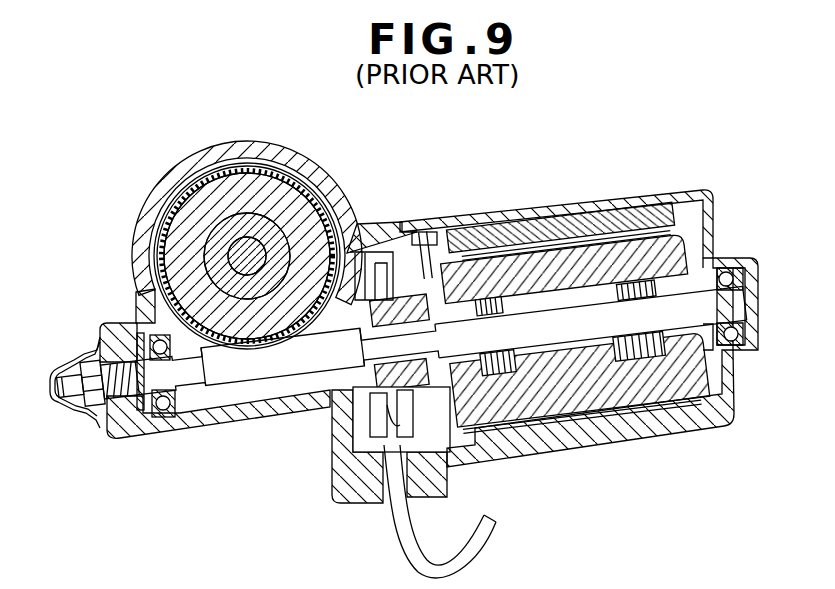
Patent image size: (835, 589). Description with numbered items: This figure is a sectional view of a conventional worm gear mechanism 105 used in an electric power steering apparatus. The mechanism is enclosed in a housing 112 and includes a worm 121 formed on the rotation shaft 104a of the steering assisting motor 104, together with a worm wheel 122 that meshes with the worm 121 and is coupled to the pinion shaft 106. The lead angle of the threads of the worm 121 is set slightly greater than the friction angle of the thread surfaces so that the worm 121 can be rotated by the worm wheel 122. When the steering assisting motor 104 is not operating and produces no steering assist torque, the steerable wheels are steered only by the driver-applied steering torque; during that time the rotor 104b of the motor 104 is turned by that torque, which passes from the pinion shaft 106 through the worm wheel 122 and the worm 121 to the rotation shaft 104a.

The steering assisting motor 104 is at (686, 182).
The rotation shaft 104a is at (498, 337).
The rotor 104b is at (608, 252).
The worm gear mechanism 105 is at (203, 392).
The pinion shaft 106 is at (251, 246).
The housing 112 is at (143, 243).
The worm 121 is at (280, 400).
The worm wheel 122 is at (173, 213).